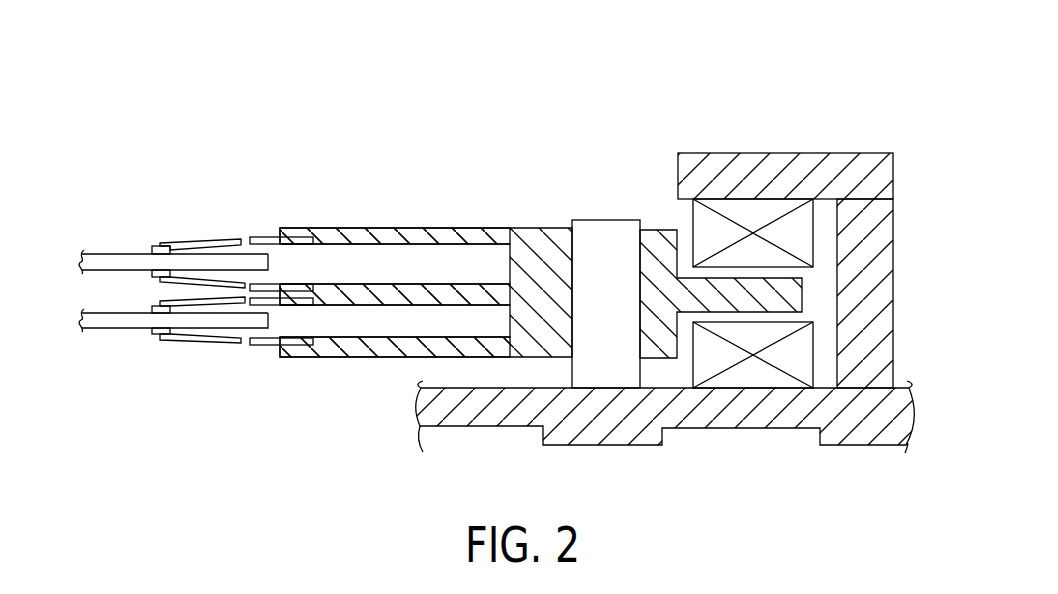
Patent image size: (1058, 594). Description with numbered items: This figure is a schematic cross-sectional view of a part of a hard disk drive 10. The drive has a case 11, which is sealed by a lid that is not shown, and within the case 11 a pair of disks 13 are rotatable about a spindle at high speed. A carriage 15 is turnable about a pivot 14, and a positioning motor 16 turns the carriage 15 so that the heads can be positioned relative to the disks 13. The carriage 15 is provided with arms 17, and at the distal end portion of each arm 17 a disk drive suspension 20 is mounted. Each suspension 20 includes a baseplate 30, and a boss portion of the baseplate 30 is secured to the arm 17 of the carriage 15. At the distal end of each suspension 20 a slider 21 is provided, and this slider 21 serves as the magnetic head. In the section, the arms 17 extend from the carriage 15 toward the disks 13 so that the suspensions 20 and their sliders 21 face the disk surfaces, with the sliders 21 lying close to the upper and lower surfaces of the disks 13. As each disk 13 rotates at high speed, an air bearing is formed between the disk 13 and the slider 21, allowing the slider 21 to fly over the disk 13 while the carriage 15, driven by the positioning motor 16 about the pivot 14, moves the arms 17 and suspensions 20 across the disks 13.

The hard disk drive 10 is at (740, 124).
The case 11 is at (852, 447).
The disk 13 is at (105, 262).
The pivot 14 is at (607, 233).
The carriage 15 is at (466, 224).
The positioning motor 16 is at (750, 377).
The arm 17 is at (348, 228).
The disk drive suspension 20 is at (207, 240).
The slider 21 is at (153, 247).
The baseplate 30 is at (267, 236).